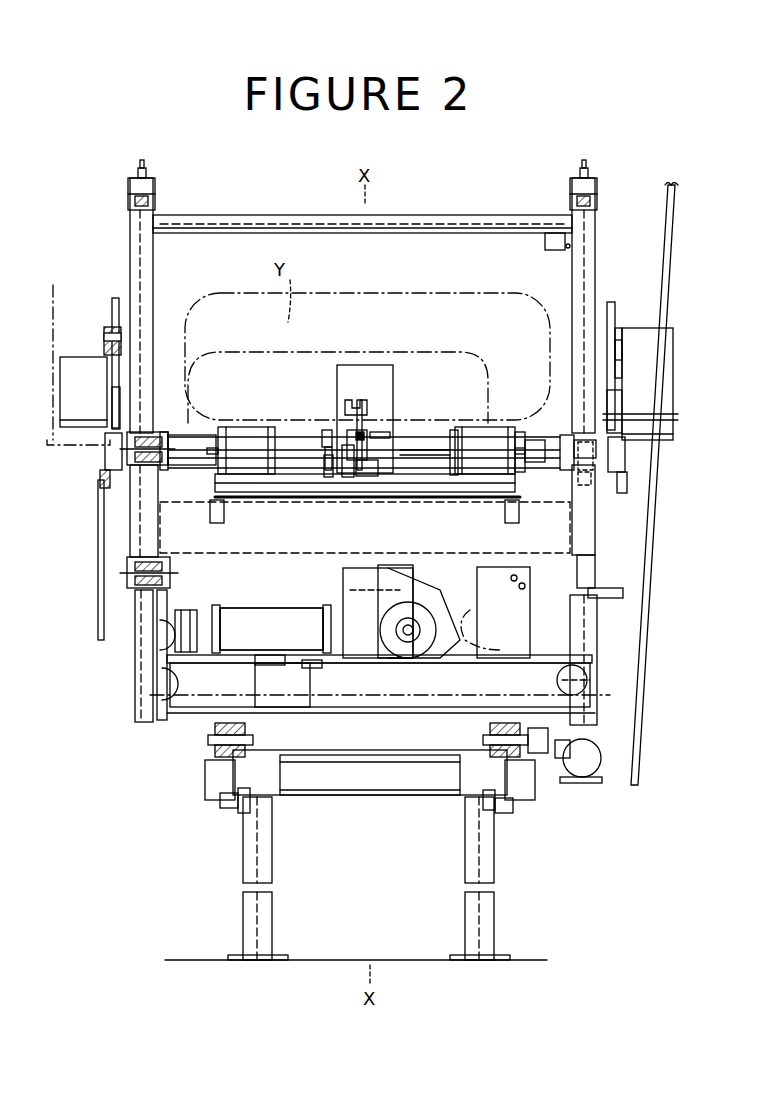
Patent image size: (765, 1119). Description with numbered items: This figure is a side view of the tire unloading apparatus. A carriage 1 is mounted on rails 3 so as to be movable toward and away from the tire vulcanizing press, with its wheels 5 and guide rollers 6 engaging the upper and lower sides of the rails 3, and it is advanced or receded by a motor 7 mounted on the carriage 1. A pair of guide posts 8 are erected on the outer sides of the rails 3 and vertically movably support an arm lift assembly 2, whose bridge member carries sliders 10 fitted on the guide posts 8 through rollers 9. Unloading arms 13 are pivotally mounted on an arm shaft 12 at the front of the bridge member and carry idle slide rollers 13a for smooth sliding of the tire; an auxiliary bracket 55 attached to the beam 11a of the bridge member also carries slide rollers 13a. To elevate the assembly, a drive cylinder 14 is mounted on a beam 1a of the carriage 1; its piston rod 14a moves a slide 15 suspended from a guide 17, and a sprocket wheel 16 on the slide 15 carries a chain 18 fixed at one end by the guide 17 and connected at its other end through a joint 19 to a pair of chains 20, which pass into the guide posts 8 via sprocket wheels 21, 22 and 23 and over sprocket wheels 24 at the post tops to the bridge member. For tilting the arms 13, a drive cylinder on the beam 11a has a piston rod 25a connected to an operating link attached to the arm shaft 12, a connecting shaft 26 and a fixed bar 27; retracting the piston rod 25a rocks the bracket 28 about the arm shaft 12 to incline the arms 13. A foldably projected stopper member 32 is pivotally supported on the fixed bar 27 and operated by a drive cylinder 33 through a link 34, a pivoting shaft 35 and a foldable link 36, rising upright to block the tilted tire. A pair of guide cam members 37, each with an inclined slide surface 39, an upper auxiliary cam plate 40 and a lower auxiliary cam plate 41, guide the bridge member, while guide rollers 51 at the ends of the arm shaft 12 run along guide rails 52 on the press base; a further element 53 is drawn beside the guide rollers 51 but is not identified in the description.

The carriage 1 is at (150, 658).
The beam 1a is at (352, 695).
The arm lift assembly 2 is at (128, 542).
The rails 3 is at (220, 770).
The wheels 5 is at (215, 728).
The guide rollers 6 is at (230, 808).
The motor 7 is at (592, 760).
The guide posts 8 is at (132, 272).
The rollers 9 is at (146, 436).
The sliders 10 is at (130, 508).
The beam 11a is at (318, 550).
The arm shaft 12 is at (192, 466).
The unloading arms 13 is at (156, 440).
The idle slide rollers 13a is at (226, 430).
The drive cylinder 14 is at (290, 614).
The piston rod 14a is at (362, 664).
The slide 15 is at (416, 570).
The sprocket wheel 16 is at (434, 660).
The guide 17 is at (462, 570).
The chain 18 is at (378, 570).
The joint 19 is at (290, 668).
The chains 20 is at (118, 364).
The sprocket wheel 21 is at (152, 636).
The sprocket wheel 22 is at (150, 684).
The sprocket wheel 23 is at (590, 684).
The sprocket wheels 24 is at (146, 164).
The piston rod 25a is at (326, 476).
The connecting shaft 26 is at (460, 450).
The fixed bar 27 is at (292, 454).
The bracket 28 is at (388, 440).
The stopper member 32 is at (382, 380).
The drive cylinder 33 is at (330, 428).
The link 34 is at (348, 476).
The pivoting shaft 35 is at (362, 476).
The foldable link 36 is at (372, 420).
The guide cam member 37 is at (92, 368).
The inclined slide surface 39 is at (622, 384).
The auxiliary cam plate 40 is at (118, 318).
The lower auxiliary cam plate 41 is at (120, 398).
The guide rollers 51 is at (106, 452).
The guide rails 52 is at (98, 600).
The stop block 53 is at (104, 492).
The auxiliary bracket 55 is at (212, 508).